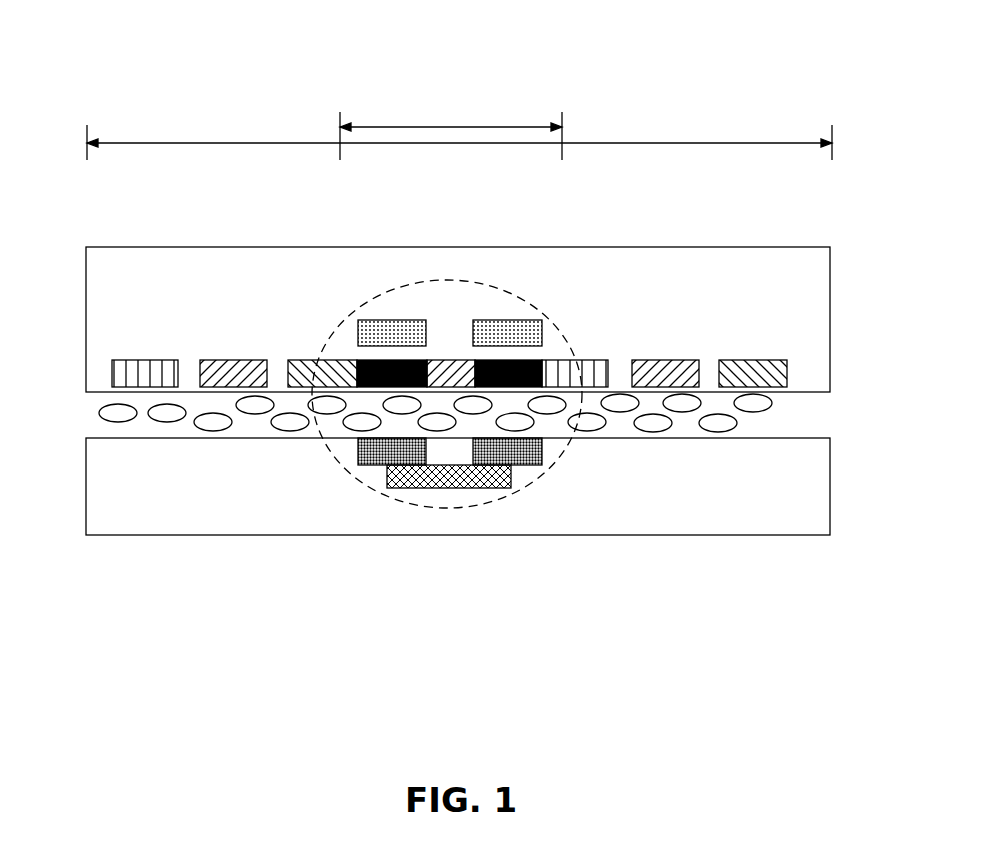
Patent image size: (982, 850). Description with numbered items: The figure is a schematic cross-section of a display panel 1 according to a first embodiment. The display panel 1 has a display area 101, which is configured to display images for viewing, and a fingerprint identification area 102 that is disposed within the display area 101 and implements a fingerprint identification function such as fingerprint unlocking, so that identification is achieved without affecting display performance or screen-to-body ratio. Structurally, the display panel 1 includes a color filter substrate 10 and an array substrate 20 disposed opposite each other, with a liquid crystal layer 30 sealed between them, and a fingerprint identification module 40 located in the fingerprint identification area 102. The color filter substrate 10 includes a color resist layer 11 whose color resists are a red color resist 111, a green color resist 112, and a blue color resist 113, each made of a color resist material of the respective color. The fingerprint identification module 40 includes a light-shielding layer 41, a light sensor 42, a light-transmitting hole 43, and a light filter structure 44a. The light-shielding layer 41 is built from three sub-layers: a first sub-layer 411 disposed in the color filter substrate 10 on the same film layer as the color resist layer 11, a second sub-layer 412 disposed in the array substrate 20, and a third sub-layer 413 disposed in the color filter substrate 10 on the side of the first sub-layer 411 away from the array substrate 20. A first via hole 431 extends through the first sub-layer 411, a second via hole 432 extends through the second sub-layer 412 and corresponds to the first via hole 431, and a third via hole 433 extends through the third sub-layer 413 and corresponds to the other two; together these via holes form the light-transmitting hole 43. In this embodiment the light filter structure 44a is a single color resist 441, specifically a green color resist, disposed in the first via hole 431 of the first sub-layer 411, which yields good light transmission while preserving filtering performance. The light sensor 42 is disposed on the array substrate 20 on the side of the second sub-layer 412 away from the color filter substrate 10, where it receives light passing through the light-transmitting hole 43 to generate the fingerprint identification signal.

The display panel 1 is at (478, 45).
The display area 101 is at (459, 132).
The fingerprint identification area 102 is at (451, 126).
The color filter substrate 10 is at (72, 247).
The array substrate 20 is at (72, 440).
The liquid crystal layer 30 is at (755, 403).
The fingerprint identification module 40 is at (578, 338).
The color resist layer 11 is at (262, 603).
The red color resist 111 is at (147, 388).
The green color resist 112 is at (236, 388).
The blue color resist 113 is at (330, 330).
The light-shielding layer 41 is at (790, 597).
The first sub-layer 411 is at (583, 363).
The second sub-layer 412 is at (527, 330).
The third sub-layer 413 is at (548, 325).
The light-transmitting hole 43 is at (335, 429).
The first via hole 431 is at (430, 356).
The second via hole 432 is at (428, 463).
The third via hole 433 is at (430, 305).
The color resist 441 is at (448, 362).
The light filter structure 44a is at (451, 373).
The light sensor 42 is at (455, 483).